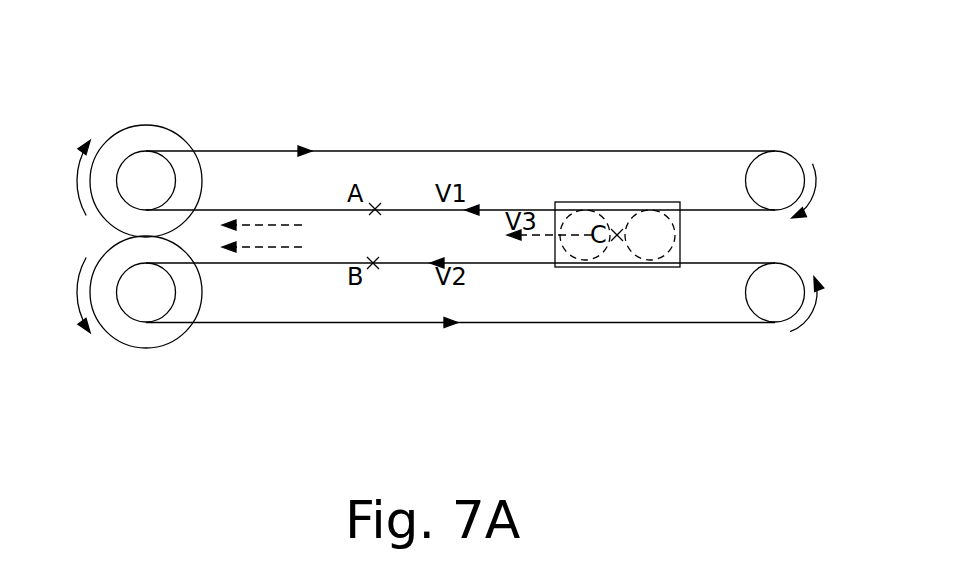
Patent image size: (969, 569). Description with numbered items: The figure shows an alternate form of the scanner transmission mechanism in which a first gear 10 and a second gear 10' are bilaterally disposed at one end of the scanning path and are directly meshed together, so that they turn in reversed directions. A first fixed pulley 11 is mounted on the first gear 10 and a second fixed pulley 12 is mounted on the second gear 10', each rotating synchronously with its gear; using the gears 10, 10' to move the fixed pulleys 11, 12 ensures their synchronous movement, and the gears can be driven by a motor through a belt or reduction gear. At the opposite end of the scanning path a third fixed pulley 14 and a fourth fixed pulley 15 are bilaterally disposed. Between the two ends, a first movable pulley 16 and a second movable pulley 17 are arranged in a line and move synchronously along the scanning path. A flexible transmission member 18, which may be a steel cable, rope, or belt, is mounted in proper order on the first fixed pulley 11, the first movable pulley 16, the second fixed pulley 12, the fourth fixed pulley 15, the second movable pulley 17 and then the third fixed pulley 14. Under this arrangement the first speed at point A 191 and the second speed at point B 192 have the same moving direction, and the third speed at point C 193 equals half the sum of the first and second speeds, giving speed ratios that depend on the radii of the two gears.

The first gear 10 is at (132, 144).
The first fixed pulley 11 is at (152, 167).
The second gear 10' is at (134, 343).
The second fixed pulley 12 is at (158, 308).
The third fixed pulley 14 is at (775, 162).
The fourth fixed pulley 15 is at (775, 298).
The first movable pulley 16 is at (577, 220).
The second movable pulley 17 is at (650, 218).
The flexible transmission member 18 is at (517, 323).
The point A 191 is at (375, 209).
The point B 192 is at (373, 263).
The point C 193 is at (617, 235).